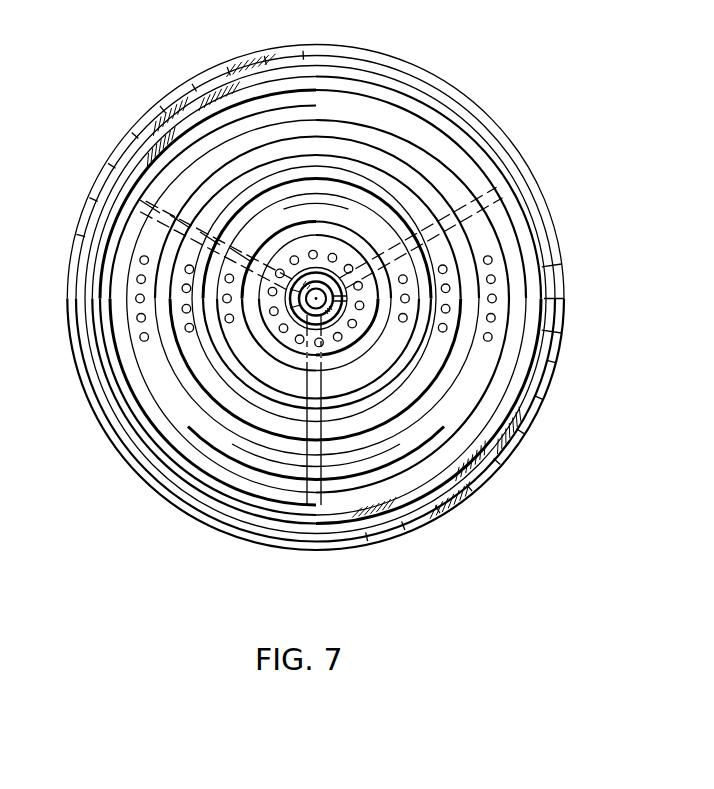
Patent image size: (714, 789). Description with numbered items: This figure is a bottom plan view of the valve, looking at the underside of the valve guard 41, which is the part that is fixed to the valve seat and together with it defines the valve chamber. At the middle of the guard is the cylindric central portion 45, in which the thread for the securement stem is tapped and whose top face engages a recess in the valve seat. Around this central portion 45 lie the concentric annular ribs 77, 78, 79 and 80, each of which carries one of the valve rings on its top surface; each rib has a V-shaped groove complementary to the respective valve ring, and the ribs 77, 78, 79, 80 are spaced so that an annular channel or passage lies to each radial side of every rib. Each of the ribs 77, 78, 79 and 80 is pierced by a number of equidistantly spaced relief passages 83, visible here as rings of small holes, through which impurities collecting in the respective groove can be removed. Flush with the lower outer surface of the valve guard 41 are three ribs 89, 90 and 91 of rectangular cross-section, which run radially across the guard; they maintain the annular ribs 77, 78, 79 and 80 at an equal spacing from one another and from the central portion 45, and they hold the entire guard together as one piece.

The valve guard 41 is at (497, 127).
The cylindric central portion 45 is at (352, 266).
The annular rib 77 is at (287, 115).
The annular rib 78 is at (345, 158).
The annular rib 79 is at (363, 213).
The annular rib 80 is at (430, 232).
The relief passages 83 is at (141, 259).
The rib of rectangular cross-section 89 is at (306, 505).
The rib of rectangular cross-section 90 is at (356, 292).
The rib of rectangular cross-section 91 is at (135, 210).